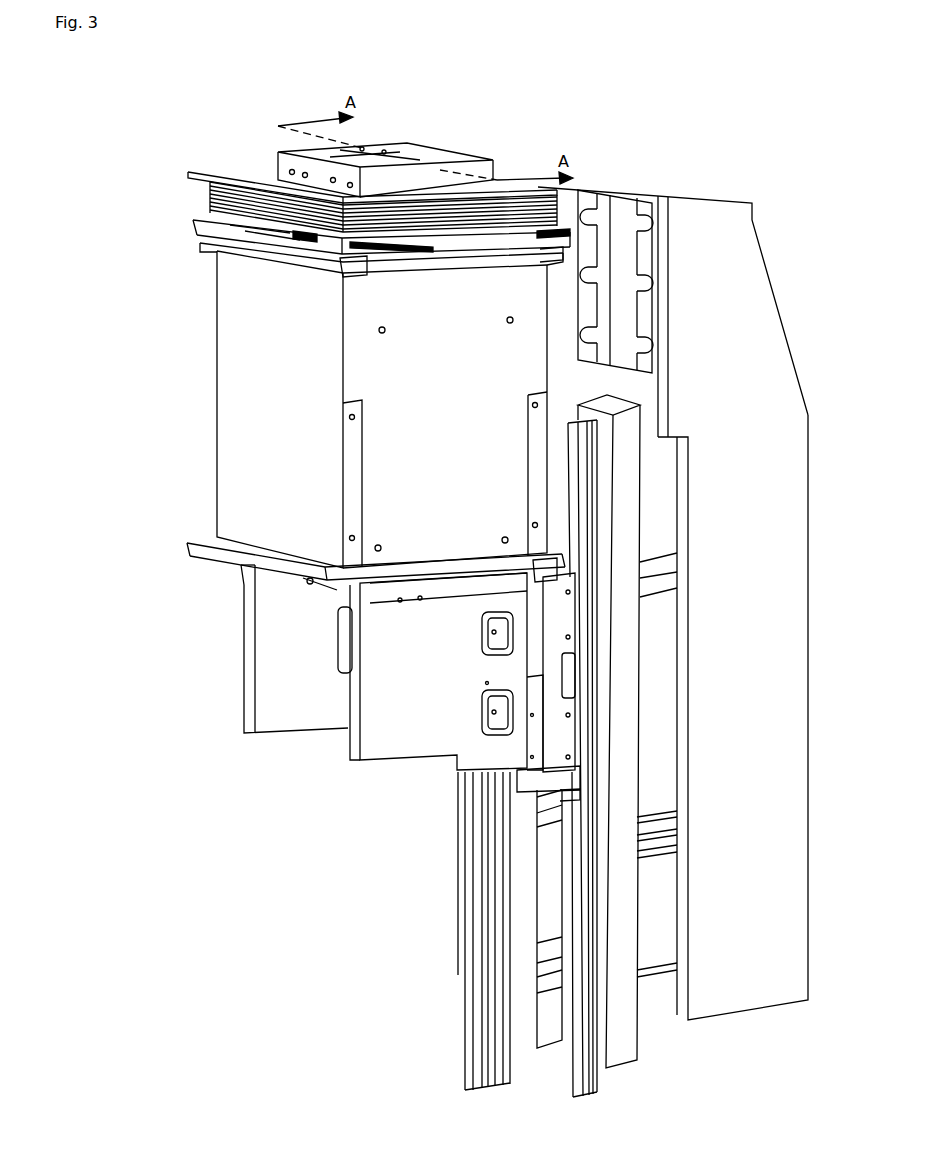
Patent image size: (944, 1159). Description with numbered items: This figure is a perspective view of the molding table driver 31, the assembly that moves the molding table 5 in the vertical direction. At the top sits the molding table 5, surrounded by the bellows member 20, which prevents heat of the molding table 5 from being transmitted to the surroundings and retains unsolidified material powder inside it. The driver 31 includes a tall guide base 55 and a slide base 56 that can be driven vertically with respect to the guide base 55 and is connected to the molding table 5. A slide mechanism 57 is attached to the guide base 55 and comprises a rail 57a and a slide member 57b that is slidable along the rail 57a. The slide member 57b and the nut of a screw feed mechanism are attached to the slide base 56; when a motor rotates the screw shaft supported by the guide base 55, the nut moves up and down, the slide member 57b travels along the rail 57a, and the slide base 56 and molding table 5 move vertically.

The molding table 5 is at (437, 152).
The bellows member 20 is at (208, 196).
The molding table driver 31 is at (803, 133).
The guide base 55 is at (792, 745).
The slide base 56 is at (248, 708).
The slide mechanism 57 is at (660, 1060).
The rail 57a is at (618, 798).
The slide member 57b is at (573, 738).